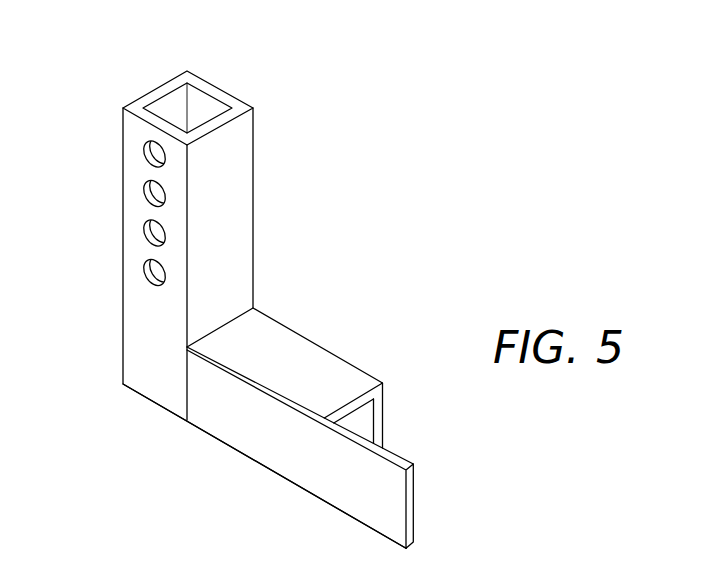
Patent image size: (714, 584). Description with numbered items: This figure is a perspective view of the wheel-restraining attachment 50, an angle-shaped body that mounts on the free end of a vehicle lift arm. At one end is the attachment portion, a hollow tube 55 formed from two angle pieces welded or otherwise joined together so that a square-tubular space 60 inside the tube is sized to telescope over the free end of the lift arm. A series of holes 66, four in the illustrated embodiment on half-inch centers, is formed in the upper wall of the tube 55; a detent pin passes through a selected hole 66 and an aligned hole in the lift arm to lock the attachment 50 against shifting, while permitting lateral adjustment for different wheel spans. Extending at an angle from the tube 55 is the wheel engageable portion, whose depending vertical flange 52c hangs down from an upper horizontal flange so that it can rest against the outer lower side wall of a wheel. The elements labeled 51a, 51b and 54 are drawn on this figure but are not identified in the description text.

The attachment 50 is at (400, 266).
The plate end portion 51a is at (372, 498).
The plate portion 51b is at (248, 427).
The vertical flange 52c is at (320, 370).
The vertical post 54 is at (255, 208).
The hollow tube 55 is at (235, 137).
The square-tubular space 60 is at (177, 103).
The holes 66 is at (156, 190).